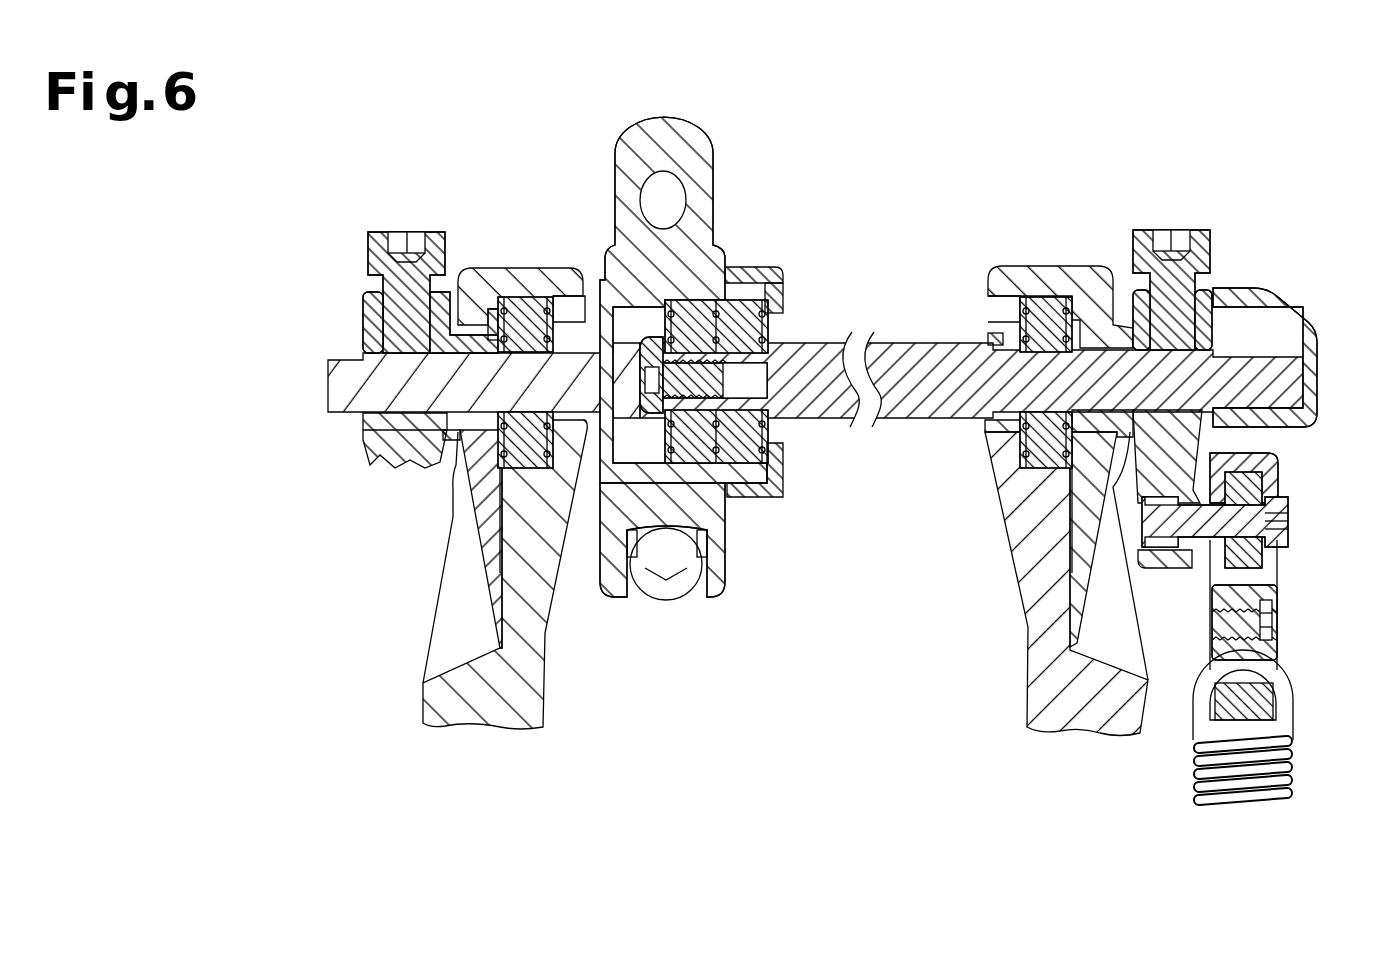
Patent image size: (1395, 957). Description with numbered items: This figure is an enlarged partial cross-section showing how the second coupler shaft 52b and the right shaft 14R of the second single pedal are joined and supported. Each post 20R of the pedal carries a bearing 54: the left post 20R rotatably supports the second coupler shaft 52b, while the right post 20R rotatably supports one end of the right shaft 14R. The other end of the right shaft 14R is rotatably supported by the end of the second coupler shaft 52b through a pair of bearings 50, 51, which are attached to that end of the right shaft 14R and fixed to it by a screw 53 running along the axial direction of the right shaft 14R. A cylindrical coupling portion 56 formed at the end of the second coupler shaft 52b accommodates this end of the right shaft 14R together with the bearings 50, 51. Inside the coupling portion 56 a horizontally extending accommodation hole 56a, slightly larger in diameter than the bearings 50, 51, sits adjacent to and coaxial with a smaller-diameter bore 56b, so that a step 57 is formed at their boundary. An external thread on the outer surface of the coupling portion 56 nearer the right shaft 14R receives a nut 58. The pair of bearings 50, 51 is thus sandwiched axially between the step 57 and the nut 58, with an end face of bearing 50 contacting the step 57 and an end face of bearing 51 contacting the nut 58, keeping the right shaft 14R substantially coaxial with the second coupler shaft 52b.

The right shaft 14R is at (1305, 384).
The post 20R is at (423, 684).
The bearing 50 is at (702, 279).
The bearing 51 is at (775, 267).
The second coupler shaft 52b is at (330, 381).
The screw 53 is at (648, 383).
The bearing 54 is at (523, 307).
The coupling portion 56 is at (600, 284).
The accommodation hole 56a is at (778, 474).
The bore 56b is at (628, 541).
The step 57 is at (678, 478).
The nut 58 is at (784, 291).